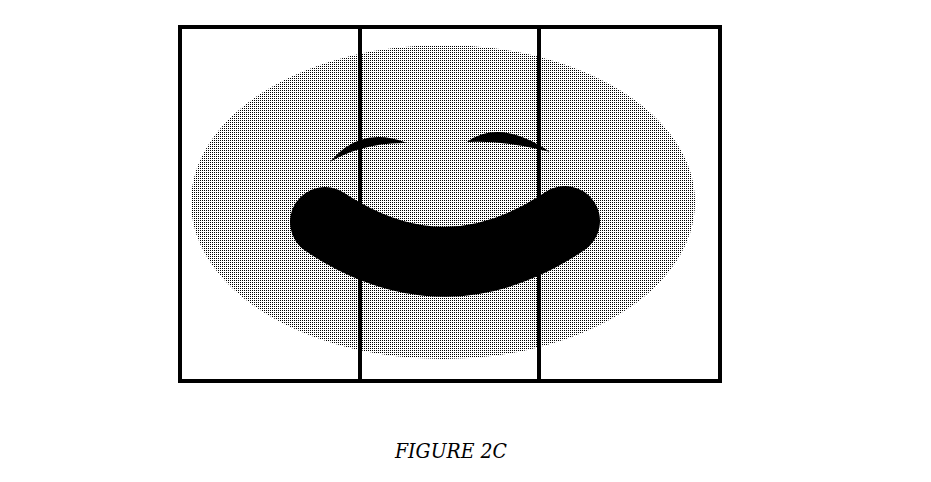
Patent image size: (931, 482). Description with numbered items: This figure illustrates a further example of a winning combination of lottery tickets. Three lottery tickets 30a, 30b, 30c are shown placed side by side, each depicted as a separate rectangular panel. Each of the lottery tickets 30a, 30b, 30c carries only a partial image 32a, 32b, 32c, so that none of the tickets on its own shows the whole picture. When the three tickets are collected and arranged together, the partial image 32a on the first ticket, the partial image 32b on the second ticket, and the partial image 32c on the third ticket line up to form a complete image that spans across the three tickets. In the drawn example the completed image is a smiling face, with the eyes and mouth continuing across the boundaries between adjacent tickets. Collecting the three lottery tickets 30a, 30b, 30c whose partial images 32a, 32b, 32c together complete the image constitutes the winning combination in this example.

The lottery ticket 30a is at (165, 80).
The lottery ticket 30b is at (401, 395).
The lottery ticket 30c is at (742, 75).
The partial image 32a is at (215, 212).
The partial image 32b is at (475, 333).
The partial image 32c is at (667, 207).